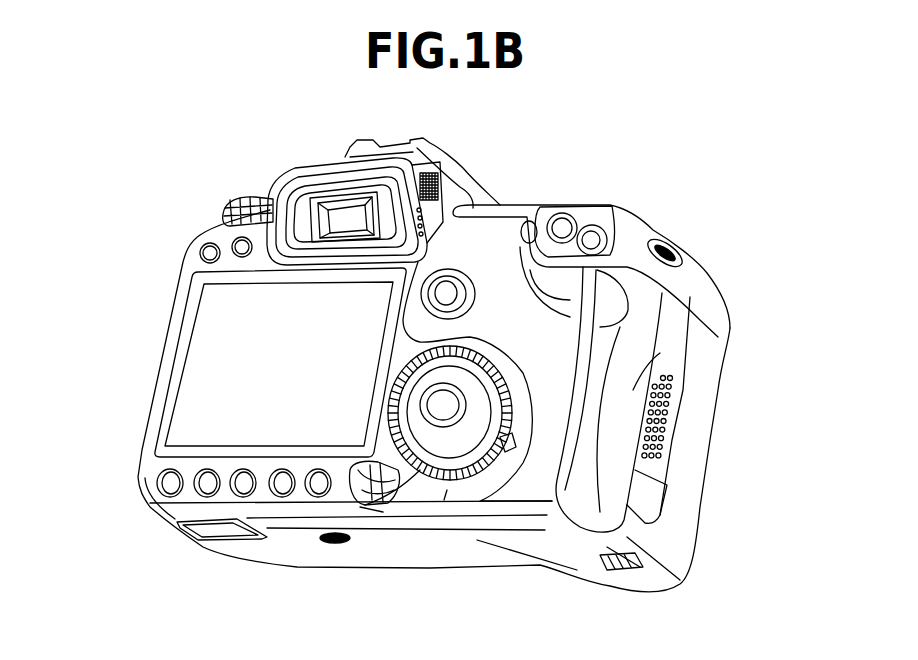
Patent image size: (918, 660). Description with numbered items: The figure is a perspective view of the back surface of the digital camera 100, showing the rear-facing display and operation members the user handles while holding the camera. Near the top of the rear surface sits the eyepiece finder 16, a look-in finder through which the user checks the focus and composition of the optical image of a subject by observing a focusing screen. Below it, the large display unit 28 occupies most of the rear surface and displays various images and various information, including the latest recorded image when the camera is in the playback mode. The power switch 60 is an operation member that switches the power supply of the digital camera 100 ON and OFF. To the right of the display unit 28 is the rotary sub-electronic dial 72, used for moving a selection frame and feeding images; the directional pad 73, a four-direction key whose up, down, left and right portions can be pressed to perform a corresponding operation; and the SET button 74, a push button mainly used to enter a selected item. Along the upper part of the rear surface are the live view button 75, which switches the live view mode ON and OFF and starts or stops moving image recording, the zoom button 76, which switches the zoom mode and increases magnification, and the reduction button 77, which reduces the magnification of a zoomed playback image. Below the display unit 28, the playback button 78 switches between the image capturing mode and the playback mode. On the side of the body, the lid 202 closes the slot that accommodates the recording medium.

The digital camera 100 is at (766, 139).
The eyepiece finder 16 is at (342, 235).
The display unit 28 is at (197, 356).
The power switch 60 is at (240, 193).
The sub-electronic dial 72 is at (410, 450).
The directional pad 73 is at (430, 440).
The SET button 74 is at (445, 407).
The live view (LV) button 75 is at (440, 287).
The zoom button 76 is at (592, 230).
The reduction button 77 is at (560, 227).
The playback button 78 is at (318, 488).
The lid 202 is at (660, 353).